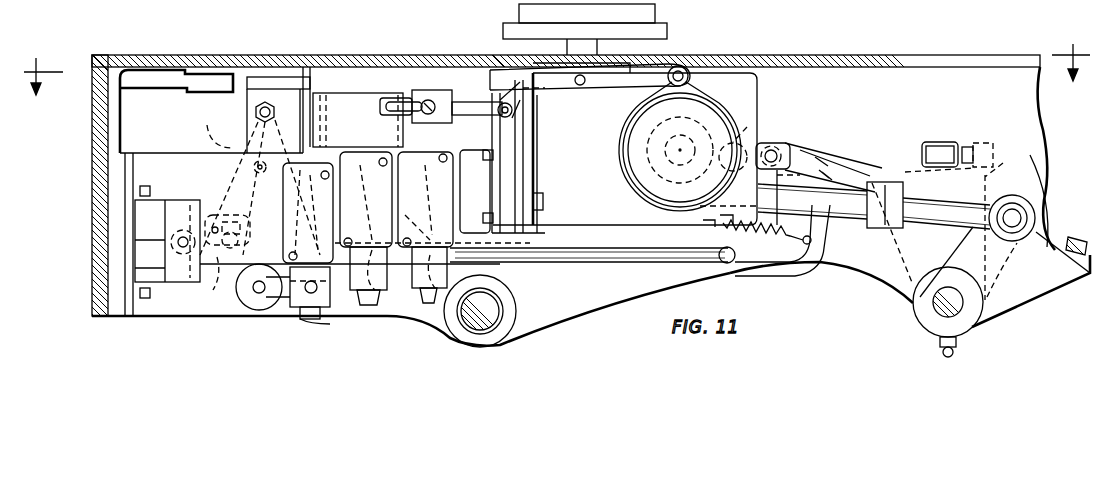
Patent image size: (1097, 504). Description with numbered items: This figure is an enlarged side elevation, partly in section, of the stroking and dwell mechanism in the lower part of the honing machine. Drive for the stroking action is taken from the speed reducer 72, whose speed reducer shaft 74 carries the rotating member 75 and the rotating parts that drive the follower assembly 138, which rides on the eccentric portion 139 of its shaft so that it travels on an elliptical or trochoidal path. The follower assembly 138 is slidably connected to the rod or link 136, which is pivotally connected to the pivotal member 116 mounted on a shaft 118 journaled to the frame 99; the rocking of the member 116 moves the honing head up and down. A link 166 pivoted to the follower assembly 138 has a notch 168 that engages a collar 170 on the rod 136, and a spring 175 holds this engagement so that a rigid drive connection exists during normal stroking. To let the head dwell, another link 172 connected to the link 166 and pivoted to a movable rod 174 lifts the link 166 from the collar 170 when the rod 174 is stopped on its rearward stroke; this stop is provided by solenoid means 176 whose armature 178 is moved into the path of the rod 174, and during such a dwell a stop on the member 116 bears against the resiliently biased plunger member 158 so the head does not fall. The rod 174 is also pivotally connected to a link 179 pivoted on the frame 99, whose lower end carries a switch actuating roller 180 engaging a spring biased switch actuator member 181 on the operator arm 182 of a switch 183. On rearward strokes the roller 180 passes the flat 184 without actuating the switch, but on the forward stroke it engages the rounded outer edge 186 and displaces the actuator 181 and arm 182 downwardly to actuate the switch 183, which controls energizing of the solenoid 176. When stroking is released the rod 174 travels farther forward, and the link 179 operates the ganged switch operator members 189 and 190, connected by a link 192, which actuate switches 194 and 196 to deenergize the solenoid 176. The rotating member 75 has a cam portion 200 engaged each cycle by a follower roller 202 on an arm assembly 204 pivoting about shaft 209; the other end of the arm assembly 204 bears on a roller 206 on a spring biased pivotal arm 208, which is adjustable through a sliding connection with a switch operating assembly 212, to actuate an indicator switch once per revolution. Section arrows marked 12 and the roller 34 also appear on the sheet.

The section line 12 is at (557, 82).
The roller 34 is at (500, 308).
The speed reducer 72 is at (757, 92).
The speed reducer shaft 74 is at (665, 150).
The rotating member 75 is at (708, 107).
The frame 99 is at (897, 62).
The pivotal member 116 is at (1016, 218).
The shaft 118 is at (943, 303).
The link (rod) 136 is at (826, 218).
The follower assembly 138 is at (772, 143).
The eccentric portion 139 is at (748, 126).
The plunger member 158 is at (938, 142).
The link 166 is at (798, 156).
The notch 168 is at (868, 180).
The collar 170 is at (898, 177).
The link 172 is at (778, 278).
The movable rod 174 is at (200, 223).
The spring 175 is at (720, 232).
The solenoid means 176 is at (147, 220).
The armature 178 is at (186, 228).
The link 179 is at (250, 112).
The switch actuating roller 180 is at (217, 285).
The switch actuator member 181 is at (243, 300).
The operator arm 182 is at (305, 320).
The switch 183 is at (312, 170).
The flat 184 is at (247, 283).
The rounded outer edge 186 is at (300, 318).
The switch operator member 189 is at (355, 210).
The switch operator member 190 is at (410, 238).
The link 192 is at (412, 210).
The switch 194 is at (358, 162).
The switch 196 is at (420, 157).
The cam portion 200 is at (700, 115).
The follower roller 202 is at (680, 64).
The arm assembly 204 is at (628, 85).
The roller 206 is at (508, 117).
The pivotal arm 208 is at (467, 98).
The shaft 209 is at (568, 40).
The switch operating assembly 212 is at (424, 92).